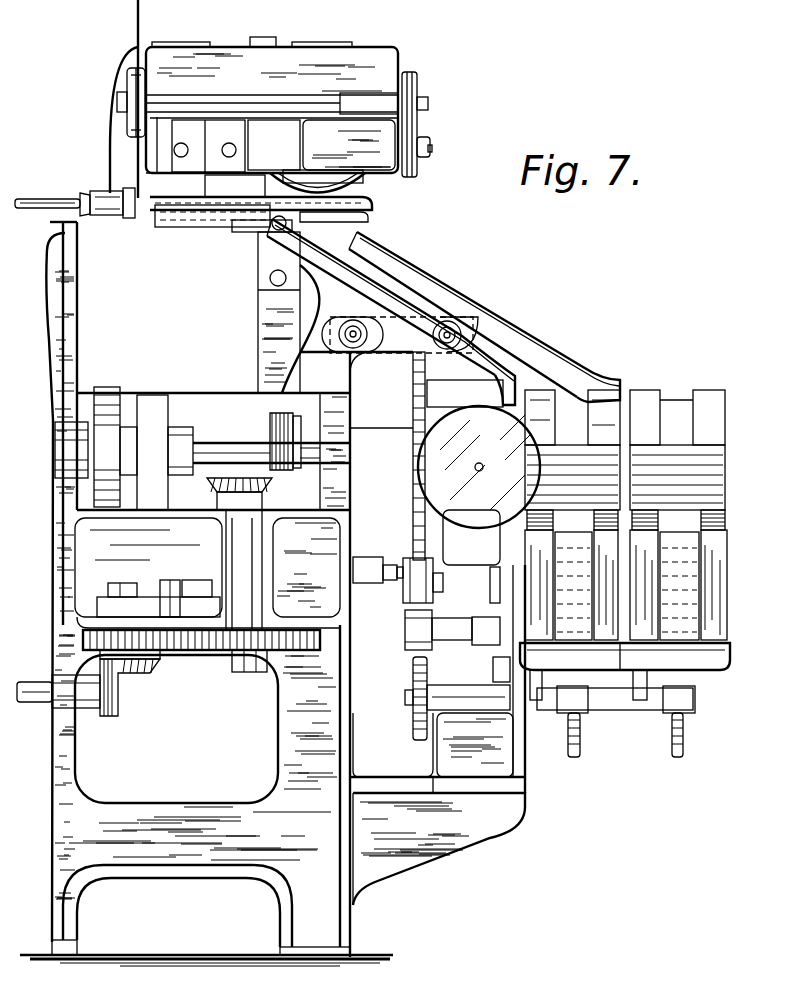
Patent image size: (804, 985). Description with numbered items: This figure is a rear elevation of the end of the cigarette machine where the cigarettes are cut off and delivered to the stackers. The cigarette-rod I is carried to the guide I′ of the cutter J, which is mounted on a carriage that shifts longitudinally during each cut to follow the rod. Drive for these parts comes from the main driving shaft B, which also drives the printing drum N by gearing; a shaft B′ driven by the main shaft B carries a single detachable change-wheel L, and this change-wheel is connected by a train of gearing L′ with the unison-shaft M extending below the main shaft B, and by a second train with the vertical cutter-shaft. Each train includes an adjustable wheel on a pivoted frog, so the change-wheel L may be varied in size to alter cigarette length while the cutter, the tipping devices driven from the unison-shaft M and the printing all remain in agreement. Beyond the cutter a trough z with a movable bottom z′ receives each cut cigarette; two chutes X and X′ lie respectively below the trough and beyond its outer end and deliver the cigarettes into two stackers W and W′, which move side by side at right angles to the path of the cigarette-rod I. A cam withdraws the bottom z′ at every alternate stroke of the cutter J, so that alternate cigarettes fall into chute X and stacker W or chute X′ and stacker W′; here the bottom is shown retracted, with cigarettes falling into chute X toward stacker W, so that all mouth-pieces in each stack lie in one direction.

The cutter J is at (136, 18).
The cigarette-rod I is at (47, 187).
The guide of the cigarette-cutter I′ is at (96, 187).
The trough z is at (278, 202).
The movable bottom z′ is at (323, 217).
The chute X is at (391, 313).
The chute X′ is at (484, 317).
The main driving shaft B is at (202, 448).
The printing drum N is at (270, 433).
The shaft B′ is at (212, 570).
The change-wheel L is at (201, 677).
The train of gearing L′ is at (142, 694).
The unison-shaft M is at (38, 705).
The stacker W is at (572, 515).
The stacker W′ is at (736, 585).